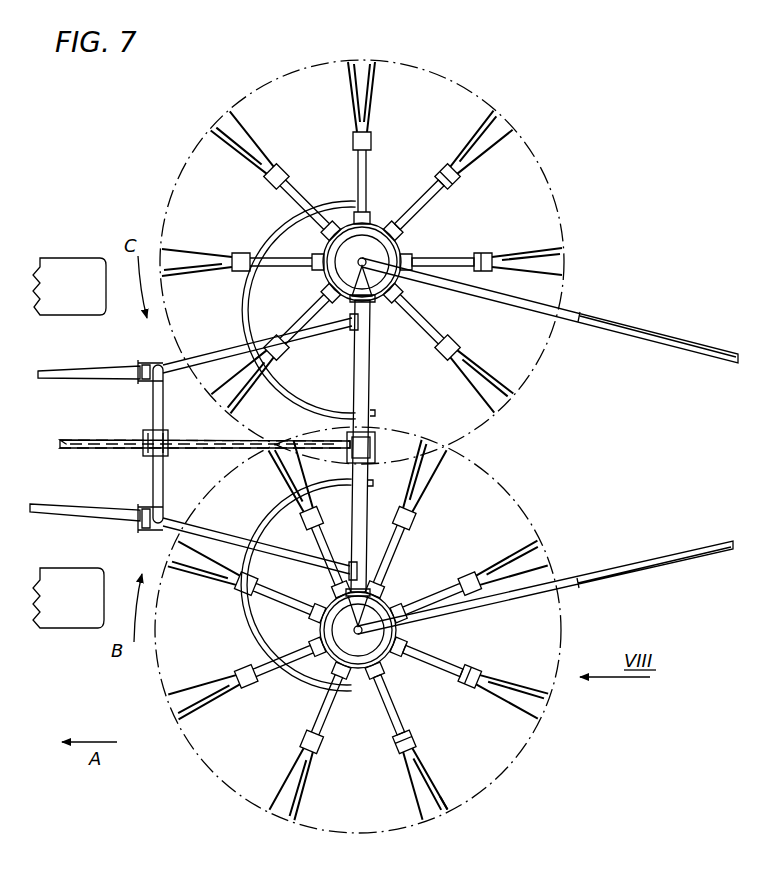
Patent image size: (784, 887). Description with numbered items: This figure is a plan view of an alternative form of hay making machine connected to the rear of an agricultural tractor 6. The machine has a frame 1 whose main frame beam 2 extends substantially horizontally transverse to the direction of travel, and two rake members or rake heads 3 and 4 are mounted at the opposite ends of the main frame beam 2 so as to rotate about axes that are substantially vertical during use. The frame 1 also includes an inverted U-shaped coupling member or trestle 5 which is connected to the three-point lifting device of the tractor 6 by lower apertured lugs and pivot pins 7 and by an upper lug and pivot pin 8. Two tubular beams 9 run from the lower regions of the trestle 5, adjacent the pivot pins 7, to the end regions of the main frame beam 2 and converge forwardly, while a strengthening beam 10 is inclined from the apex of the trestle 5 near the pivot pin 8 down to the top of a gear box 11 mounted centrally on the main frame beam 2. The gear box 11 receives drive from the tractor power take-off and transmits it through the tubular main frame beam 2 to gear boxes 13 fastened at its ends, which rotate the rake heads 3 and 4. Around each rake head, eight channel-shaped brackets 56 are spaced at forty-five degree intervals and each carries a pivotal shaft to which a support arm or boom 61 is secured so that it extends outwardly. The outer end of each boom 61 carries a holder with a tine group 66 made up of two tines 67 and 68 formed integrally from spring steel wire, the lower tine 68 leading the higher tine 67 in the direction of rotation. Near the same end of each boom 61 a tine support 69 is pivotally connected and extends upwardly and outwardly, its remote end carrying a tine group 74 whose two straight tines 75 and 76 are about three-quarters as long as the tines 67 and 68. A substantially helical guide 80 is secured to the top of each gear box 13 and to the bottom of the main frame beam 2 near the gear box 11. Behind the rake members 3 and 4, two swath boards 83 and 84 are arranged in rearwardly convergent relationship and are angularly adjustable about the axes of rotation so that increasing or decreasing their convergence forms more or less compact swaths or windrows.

The frame 1 is at (369, 446).
The main frame beam 2 is at (371, 366).
The rake member or rake head 3 is at (238, 800).
The rake member or rake head 4 is at (168, 191).
The coupling member or trestle 5 is at (153, 403).
The agricultural tractor 6 is at (60, 316).
The pivot pins 7 is at (148, 364).
The pivot pin 8 is at (150, 456).
The tubular beams 9 is at (218, 356).
The strengthening beam 10 is at (206, 441).
The gear box 11 is at (376, 448).
The gear box 13 is at (375, 240).
The bracket 56 is at (390, 598).
The support arm or boom 61 is at (430, 196).
The tine group 66 is at (352, 100).
The tine 67 is at (428, 805).
The tine 68 is at (410, 790).
The tine support 69 is at (446, 186).
The tine group 74 is at (349, 128).
The tine 75 is at (440, 815).
The tine 76 is at (420, 802).
The helical guide 80 is at (262, 232).
The swath board 83 is at (622, 568).
The swath board 84 is at (620, 318).